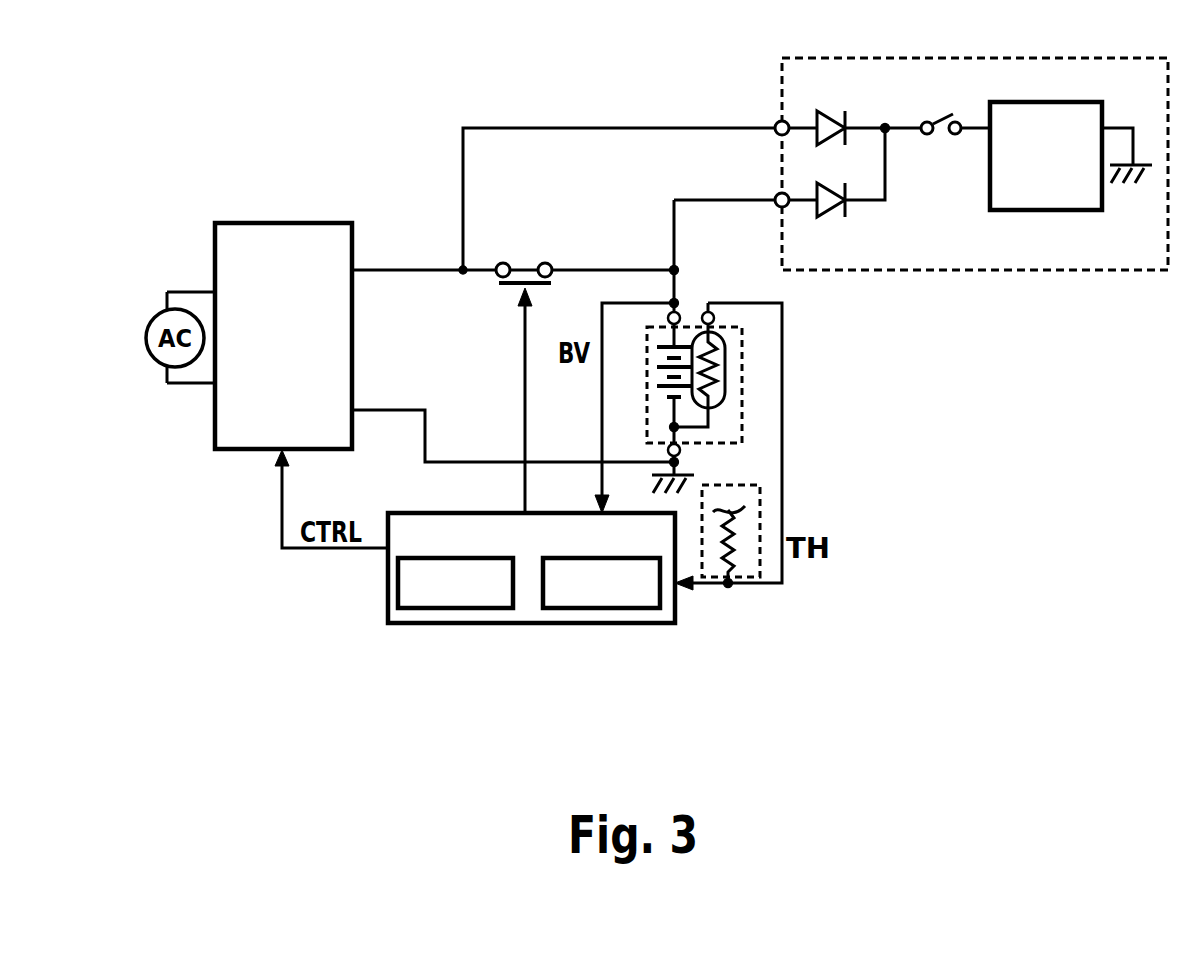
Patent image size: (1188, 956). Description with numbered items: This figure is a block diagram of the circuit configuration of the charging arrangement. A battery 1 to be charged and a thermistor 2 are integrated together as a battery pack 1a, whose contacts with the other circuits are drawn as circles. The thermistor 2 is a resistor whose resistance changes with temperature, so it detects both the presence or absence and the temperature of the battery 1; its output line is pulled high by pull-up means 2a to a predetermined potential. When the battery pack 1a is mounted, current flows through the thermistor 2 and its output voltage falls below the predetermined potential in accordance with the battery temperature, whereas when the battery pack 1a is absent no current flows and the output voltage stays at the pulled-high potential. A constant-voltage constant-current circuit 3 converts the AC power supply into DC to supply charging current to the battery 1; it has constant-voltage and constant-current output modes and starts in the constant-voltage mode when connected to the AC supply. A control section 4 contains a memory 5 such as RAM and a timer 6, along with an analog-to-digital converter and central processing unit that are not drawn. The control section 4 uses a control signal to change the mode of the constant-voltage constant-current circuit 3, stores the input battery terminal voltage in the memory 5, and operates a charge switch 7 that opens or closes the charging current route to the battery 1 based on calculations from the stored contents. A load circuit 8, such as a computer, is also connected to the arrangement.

The battery 1 is at (702, 413).
The battery pack 1a is at (742, 443).
The thermistor 2 is at (722, 348).
The pull-up means 2a is at (762, 505).
The constant-voltage constant-current circuit 3 is at (281, 222).
The control section 4 is at (439, 636).
The memory 5 is at (455, 608).
The timer 6 is at (600, 608).
The charge switch 7 is at (528, 258).
The load circuit 8 is at (1042, 270).